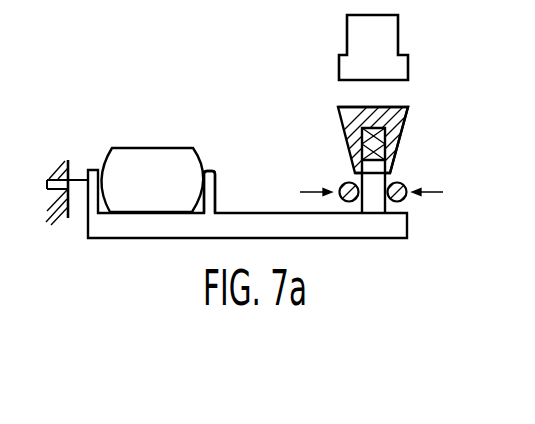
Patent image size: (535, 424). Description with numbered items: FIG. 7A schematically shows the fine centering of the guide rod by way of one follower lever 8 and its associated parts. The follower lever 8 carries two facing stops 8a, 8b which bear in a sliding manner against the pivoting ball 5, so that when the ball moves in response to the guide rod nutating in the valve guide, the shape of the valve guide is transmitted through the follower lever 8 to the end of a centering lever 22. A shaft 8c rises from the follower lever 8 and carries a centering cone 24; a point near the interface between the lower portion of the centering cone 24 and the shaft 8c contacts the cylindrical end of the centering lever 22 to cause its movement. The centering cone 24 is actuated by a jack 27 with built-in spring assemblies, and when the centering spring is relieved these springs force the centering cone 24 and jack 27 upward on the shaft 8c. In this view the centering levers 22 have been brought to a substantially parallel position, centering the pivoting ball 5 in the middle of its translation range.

The pivoting ball 5 is at (110, 158).
The follower lever 8 is at (402, 228).
The stop 8a is at (210, 200).
The stop 8b is at (98, 171).
The shaft 8c is at (378, 177).
The centering lever 22 is at (345, 183).
The centering cone 24 is at (398, 117).
The jack 27 is at (400, 65).